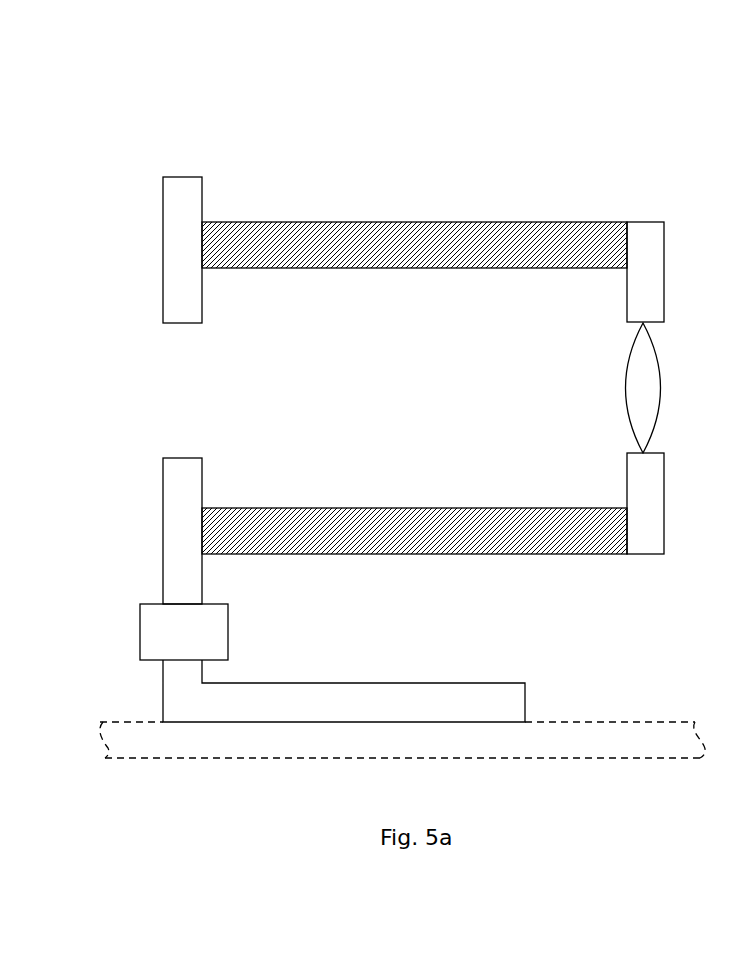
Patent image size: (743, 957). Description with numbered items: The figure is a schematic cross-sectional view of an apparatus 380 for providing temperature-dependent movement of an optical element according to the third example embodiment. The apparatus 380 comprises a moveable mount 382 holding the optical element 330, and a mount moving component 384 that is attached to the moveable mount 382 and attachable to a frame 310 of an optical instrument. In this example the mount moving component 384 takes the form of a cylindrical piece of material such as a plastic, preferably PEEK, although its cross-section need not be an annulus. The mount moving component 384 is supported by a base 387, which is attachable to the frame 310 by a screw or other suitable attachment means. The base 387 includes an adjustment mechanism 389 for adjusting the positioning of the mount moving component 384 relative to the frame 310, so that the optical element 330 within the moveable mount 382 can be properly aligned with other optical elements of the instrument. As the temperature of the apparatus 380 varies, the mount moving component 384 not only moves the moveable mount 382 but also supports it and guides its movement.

The apparatus 380 is at (474, 136).
The moveable mount 382 is at (655, 270).
The optical element 330 is at (660, 390).
The mount moving component 384 is at (385, 545).
The adjustment mechanism 389 is at (228, 633).
The base 387 is at (490, 683).
The frame 310 is at (630, 722).